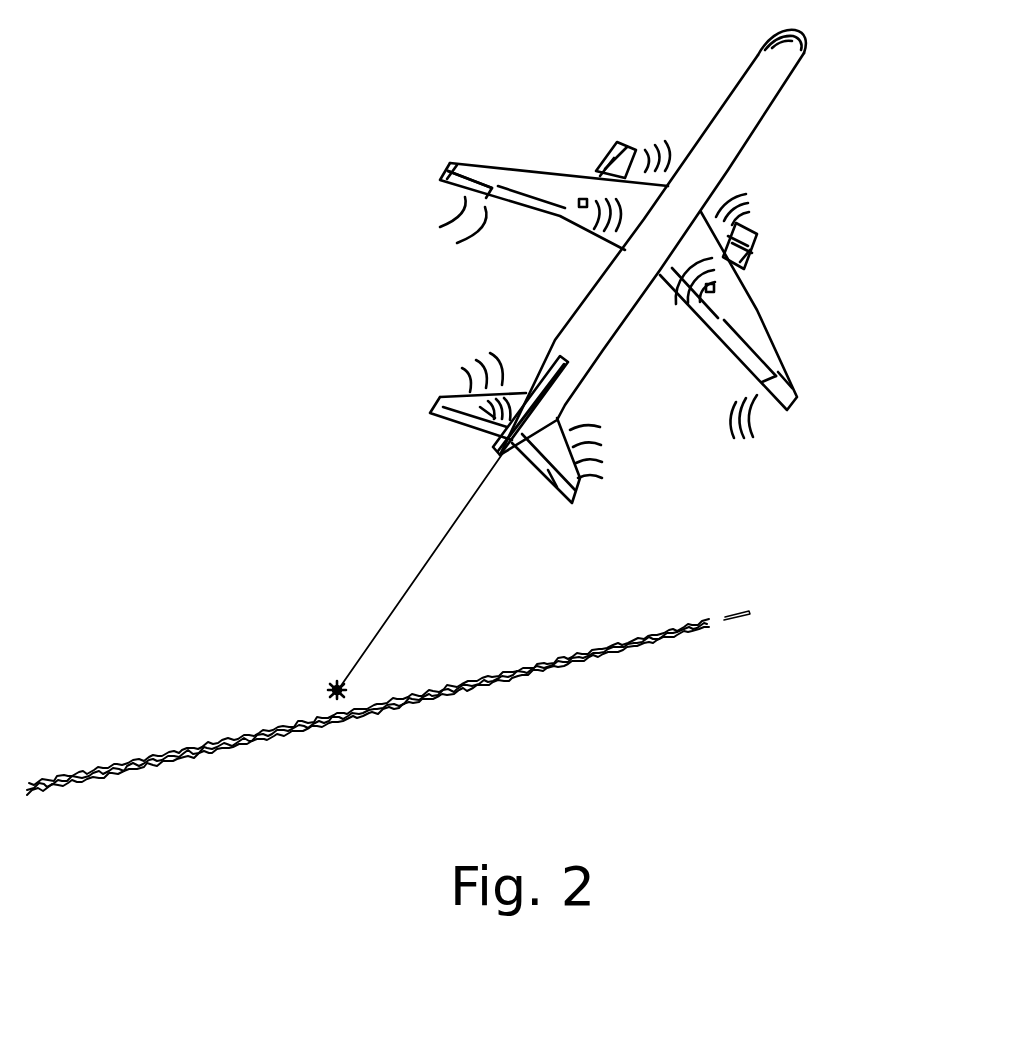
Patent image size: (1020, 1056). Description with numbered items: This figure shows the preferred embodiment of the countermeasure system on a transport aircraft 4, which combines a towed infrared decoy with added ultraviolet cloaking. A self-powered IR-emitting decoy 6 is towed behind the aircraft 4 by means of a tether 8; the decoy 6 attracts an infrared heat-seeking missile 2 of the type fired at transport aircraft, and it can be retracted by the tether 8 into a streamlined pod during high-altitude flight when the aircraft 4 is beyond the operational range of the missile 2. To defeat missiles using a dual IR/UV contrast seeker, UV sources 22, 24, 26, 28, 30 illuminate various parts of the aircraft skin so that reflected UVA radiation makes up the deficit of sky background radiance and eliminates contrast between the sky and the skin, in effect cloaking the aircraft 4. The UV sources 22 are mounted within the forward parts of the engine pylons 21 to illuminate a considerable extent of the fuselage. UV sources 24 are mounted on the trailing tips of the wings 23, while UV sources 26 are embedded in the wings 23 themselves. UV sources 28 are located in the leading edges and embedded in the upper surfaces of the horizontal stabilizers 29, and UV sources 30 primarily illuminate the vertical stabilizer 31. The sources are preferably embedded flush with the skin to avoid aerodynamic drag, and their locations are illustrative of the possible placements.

The infrared heat-seeking missile 2 is at (780, 620).
The transport aircraft 4 is at (745, 125).
The IR-emitting decoy 6 is at (327, 690).
The tether 8 is at (420, 577).
The engine pylons 21 is at (612, 153).
The UV sources 22 is at (636, 150).
The wings 23 is at (487, 178).
The UV sources 24 is at (440, 178).
The UV sources 26 is at (578, 205).
The UV sources 28 is at (440, 400).
The horizontal stabilizers 29 is at (457, 397).
The UV sources 30 is at (480, 407).
The vertical stabilizer 31 is at (558, 388).